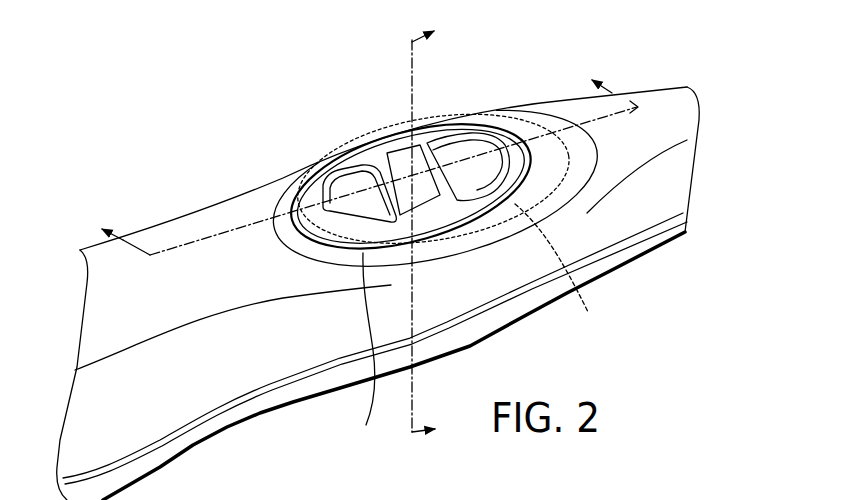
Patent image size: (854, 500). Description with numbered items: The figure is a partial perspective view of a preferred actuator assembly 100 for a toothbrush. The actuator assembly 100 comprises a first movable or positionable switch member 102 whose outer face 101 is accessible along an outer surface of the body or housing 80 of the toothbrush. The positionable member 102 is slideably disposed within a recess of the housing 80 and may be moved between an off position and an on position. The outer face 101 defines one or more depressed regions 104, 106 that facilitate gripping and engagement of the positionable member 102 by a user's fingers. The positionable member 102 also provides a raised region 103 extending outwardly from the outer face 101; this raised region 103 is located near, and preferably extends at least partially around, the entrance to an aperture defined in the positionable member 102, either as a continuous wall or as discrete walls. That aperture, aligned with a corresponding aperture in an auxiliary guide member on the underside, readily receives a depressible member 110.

The actuator assembly 100 is at (492, 68).
The body or housing 80 is at (650, 193).
The outer face 101 is at (213, 196).
The positionable switch member 102 is at (428, 220).
The raised region 103 is at (418, 132).
The depressed region 104 is at (323, 168).
The depressed region 106 is at (463, 157).
The depressible member 110 is at (387, 151).